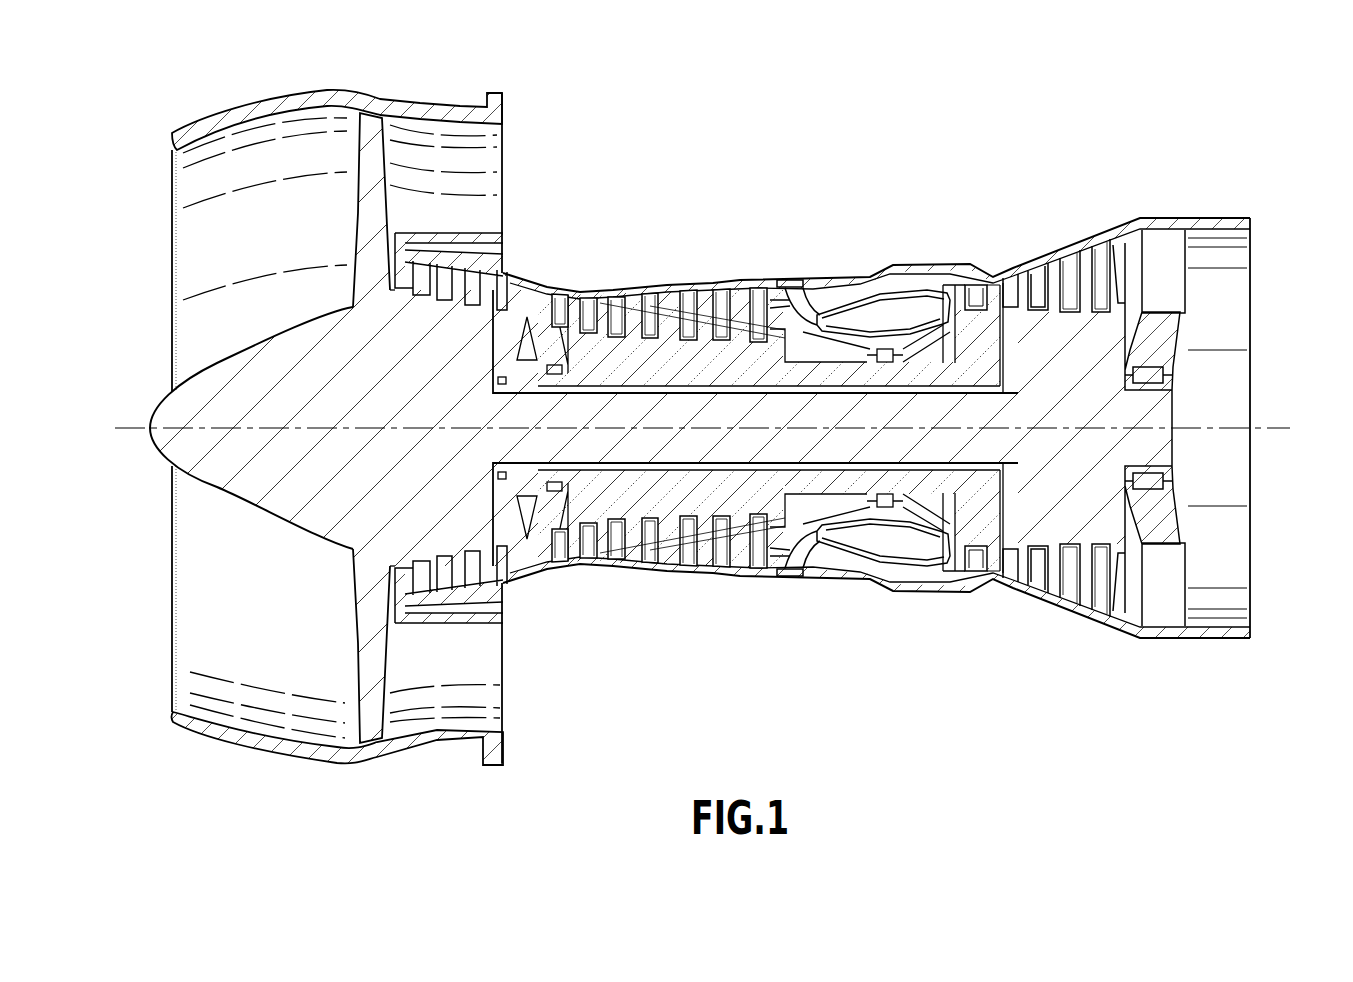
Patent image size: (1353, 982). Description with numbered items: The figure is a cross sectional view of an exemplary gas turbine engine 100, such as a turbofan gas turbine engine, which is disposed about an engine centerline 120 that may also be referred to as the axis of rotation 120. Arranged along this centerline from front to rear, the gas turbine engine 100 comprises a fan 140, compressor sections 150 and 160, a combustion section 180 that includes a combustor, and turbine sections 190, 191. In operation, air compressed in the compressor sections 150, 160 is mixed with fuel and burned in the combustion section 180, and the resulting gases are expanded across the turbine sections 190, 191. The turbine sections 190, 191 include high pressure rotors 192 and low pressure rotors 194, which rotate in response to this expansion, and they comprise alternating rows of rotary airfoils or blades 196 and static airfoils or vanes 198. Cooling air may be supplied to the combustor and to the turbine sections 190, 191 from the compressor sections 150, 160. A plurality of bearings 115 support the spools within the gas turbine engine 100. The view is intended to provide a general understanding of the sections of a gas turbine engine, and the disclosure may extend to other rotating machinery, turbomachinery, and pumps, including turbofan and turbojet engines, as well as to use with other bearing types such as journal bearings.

The gas turbine engine 100 is at (967, 147).
The bearings 115 is at (1172, 372).
The engine centerline 120 is at (128, 427).
The fan 140 is at (385, 168).
The compressor section 150 is at (395, 778).
The compressor section 160 is at (570, 584).
The combustion section 180 is at (808, 604).
The turbine section 190 is at (975, 654).
The turbine section 191 is at (1150, 654).
The high pressure rotors 192 is at (990, 300).
The low pressure rotors 194 is at (1113, 333).
The blades 196 is at (1056, 262).
The vanes 198 is at (1071, 242).